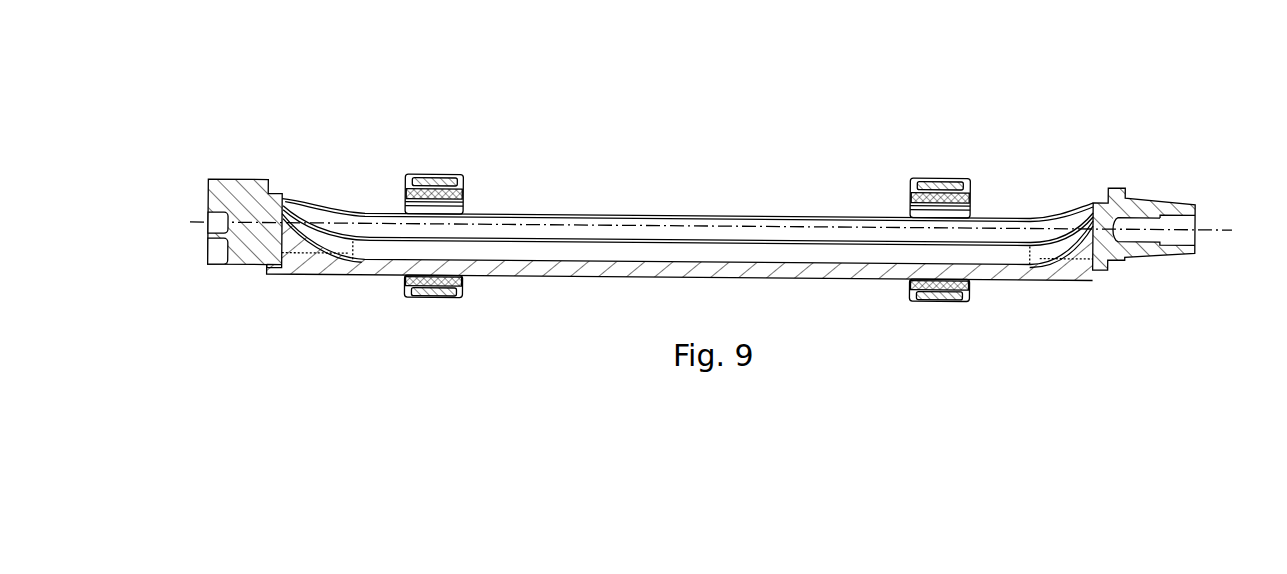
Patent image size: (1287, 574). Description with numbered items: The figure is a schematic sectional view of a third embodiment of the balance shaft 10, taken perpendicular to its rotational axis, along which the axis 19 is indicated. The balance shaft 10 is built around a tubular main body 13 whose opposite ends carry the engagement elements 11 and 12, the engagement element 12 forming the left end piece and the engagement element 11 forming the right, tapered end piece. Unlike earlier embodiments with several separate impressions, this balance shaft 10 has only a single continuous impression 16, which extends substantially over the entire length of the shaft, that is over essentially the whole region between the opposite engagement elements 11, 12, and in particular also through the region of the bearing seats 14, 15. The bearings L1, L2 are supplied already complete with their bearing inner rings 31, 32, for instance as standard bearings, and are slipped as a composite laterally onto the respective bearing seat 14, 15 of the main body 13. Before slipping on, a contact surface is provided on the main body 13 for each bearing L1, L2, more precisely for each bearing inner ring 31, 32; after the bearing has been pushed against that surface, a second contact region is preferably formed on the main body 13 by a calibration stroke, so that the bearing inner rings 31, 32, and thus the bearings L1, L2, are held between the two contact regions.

The balance shaft 10 is at (352, 71).
The engagement element 11 is at (1155, 189).
The engagement element 12 is at (234, 271).
The tubular main body 13 is at (770, 289).
The bearing seat 14 is at (957, 202).
The bearing seat 15 is at (452, 199).
The continuous impression 16 is at (638, 212).
The axis 19 is at (1217, 229).
The bearing inner ring 31 is at (972, 198).
The bearing inner ring 32 is at (465, 196).
The bearing L1 is at (894, 157).
The bearing L2 is at (389, 153).